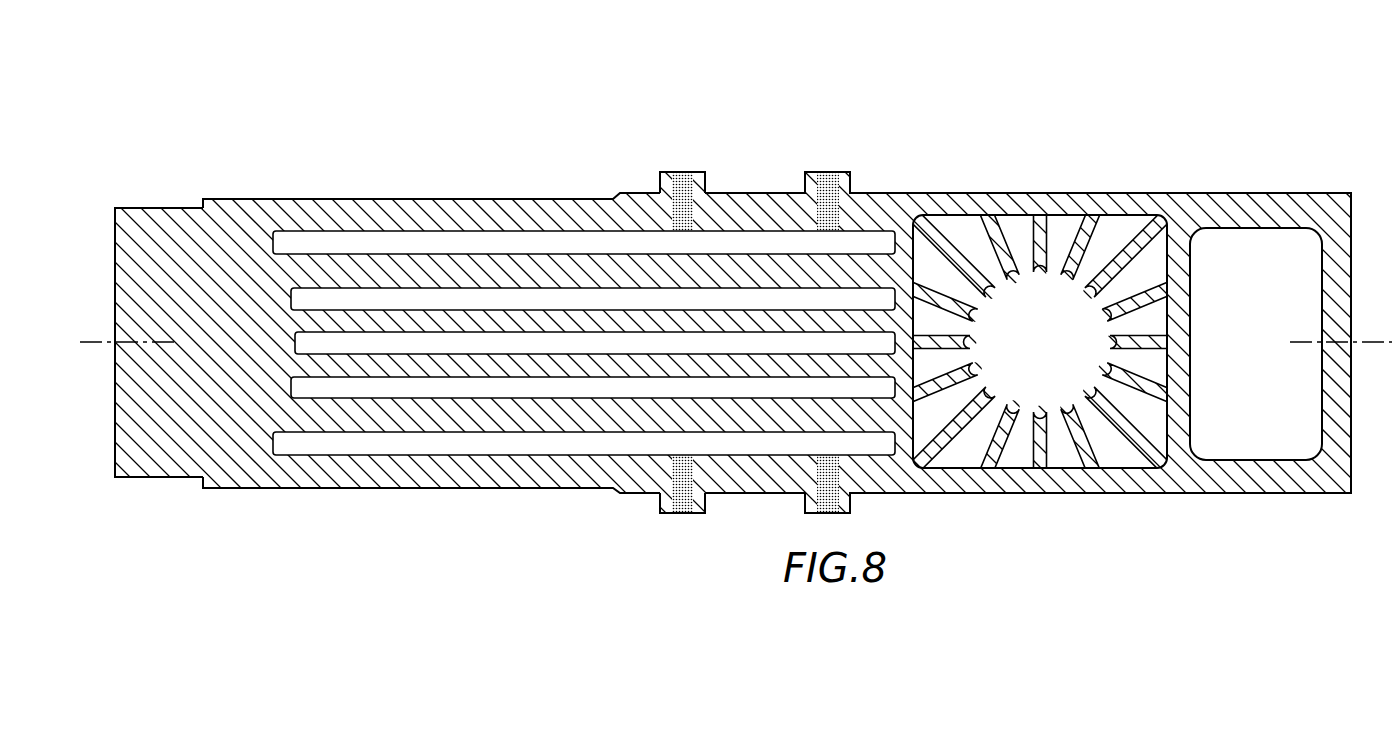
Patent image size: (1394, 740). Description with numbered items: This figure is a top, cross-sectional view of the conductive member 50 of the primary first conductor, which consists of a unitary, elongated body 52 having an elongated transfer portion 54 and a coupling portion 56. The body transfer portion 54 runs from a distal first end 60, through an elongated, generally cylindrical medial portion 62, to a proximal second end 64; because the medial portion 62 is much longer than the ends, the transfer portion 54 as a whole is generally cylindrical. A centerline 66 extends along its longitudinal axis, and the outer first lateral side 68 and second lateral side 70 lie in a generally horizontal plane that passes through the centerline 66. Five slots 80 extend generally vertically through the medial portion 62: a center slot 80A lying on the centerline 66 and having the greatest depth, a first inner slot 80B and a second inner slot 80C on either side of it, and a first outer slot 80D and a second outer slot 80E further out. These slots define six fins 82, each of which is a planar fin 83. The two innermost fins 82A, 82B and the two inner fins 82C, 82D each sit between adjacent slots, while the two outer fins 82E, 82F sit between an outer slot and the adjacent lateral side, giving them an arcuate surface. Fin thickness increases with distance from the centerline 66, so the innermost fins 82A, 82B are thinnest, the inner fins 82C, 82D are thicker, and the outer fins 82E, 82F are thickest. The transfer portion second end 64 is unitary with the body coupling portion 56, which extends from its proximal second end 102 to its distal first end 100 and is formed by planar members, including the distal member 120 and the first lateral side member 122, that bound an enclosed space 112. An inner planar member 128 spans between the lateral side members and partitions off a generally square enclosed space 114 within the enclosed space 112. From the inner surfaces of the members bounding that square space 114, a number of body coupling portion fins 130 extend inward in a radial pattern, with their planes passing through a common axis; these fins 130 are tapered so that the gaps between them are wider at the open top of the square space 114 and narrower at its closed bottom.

The conductive member 50 is at (763, 100).
The conductive member body 52 is at (553, 199).
The body transfer portion 54 is at (551, 338).
The body coupling portion 56 is at (1148, 249).
The first end 60 is at (118, 208).
The medial portion 62 is at (378, 197).
The second end 64 is at (655, 200).
The centerline 66 is at (96, 340).
The first lateral side 68 is at (362, 488).
The second lateral side 70 is at (264, 182).
The slots 80 is at (551, 432).
The center slot 80A is at (297, 345).
The first inner slot 80B is at (293, 390).
The second inner slot 80C is at (293, 301).
The first outer slot 80D is at (277, 446).
The second outer slot 80E is at (277, 247).
The fins 82 is at (697, 570).
The innermost fin 82A is at (392, 320).
The innermost fin 82B is at (432, 365).
The inner fin 82C is at (376, 268).
The inner fin 82D is at (483, 413).
The outer fin 82E is at (488, 199).
The outer fin 82F is at (580, 473).
The planar fin 83 is at (627, 635).
The first end 100 is at (1259, 293).
The second end 102 is at (872, 193).
The enclosed space 112 is at (1240, 248).
The generally square enclosed space 114 is at (1055, 325).
The distal member 120 is at (1340, 300).
The first lateral side member 122 is at (1182, 205).
The inner planar member 128 is at (1188, 332).
The body coupling portion fins 130 is at (1045, 232).